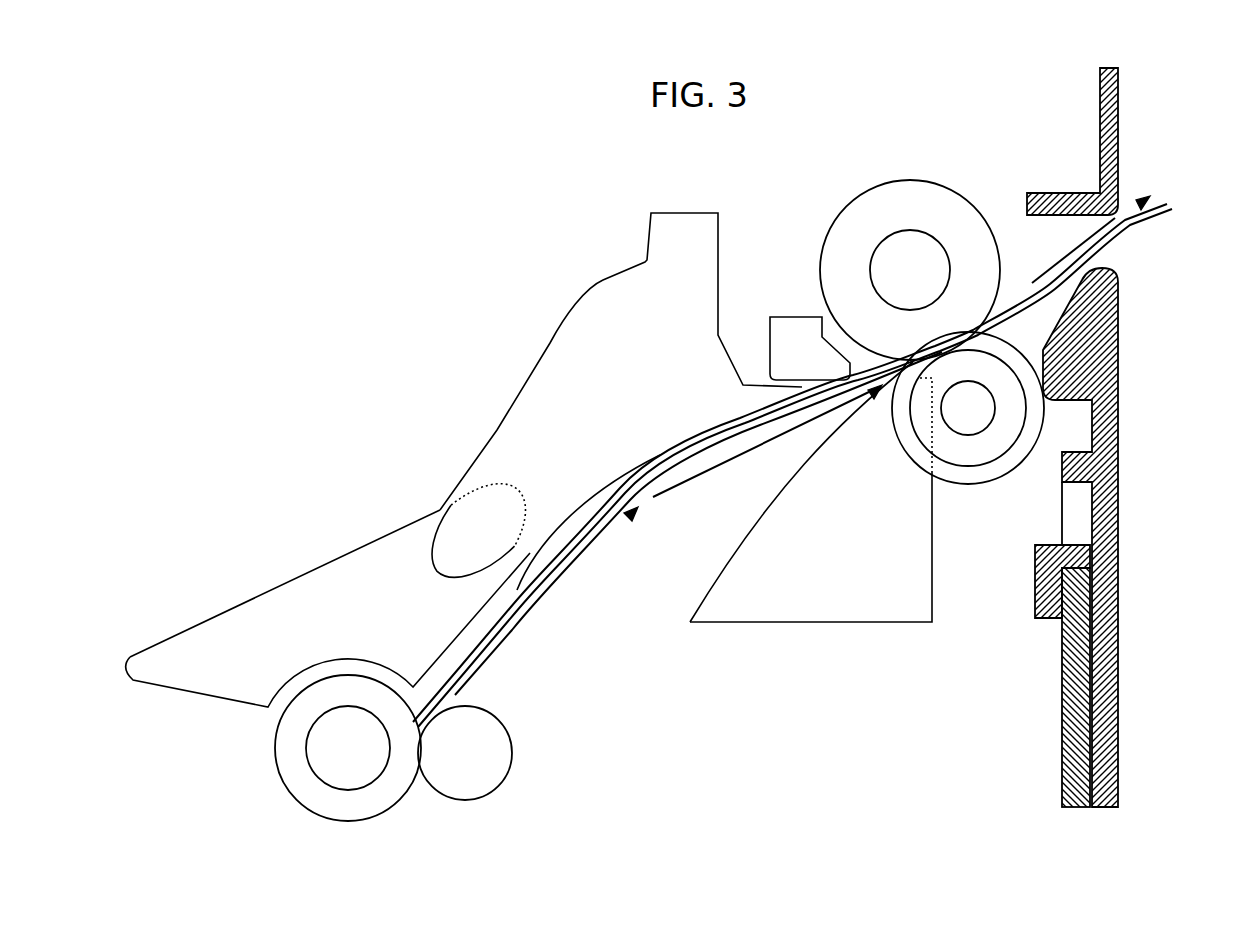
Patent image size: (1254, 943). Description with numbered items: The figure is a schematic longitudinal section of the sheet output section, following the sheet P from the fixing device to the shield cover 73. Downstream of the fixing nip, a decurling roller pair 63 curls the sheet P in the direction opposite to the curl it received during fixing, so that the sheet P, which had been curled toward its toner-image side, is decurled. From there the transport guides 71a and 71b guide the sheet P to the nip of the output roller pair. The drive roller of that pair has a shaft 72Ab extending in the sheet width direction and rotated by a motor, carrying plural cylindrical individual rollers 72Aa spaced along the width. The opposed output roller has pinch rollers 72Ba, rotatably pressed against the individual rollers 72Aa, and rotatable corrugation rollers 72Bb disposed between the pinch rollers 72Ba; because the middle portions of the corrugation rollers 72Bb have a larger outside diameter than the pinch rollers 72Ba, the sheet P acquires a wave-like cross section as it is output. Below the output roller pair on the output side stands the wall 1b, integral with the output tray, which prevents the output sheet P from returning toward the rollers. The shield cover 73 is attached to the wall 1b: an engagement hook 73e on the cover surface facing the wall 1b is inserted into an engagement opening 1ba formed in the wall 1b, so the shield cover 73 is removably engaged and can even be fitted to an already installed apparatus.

The decurling roller pair 63 is at (268, 765).
The transport guide 71a is at (287, 622).
The transport guide 71b is at (563, 427).
The individual roller 72Aa is at (863, 222).
The shaft 72Ab is at (917, 255).
The pinch roller 72Ba is at (960, 447).
The corrugation roller 72Bb is at (918, 453).
The shield cover 73 is at (1120, 168).
The engagement hook 73e is at (1040, 590).
The wall 1b is at (1063, 720).
The engagement opening 1ba is at (1090, 505).
The sheet P is at (640, 483).